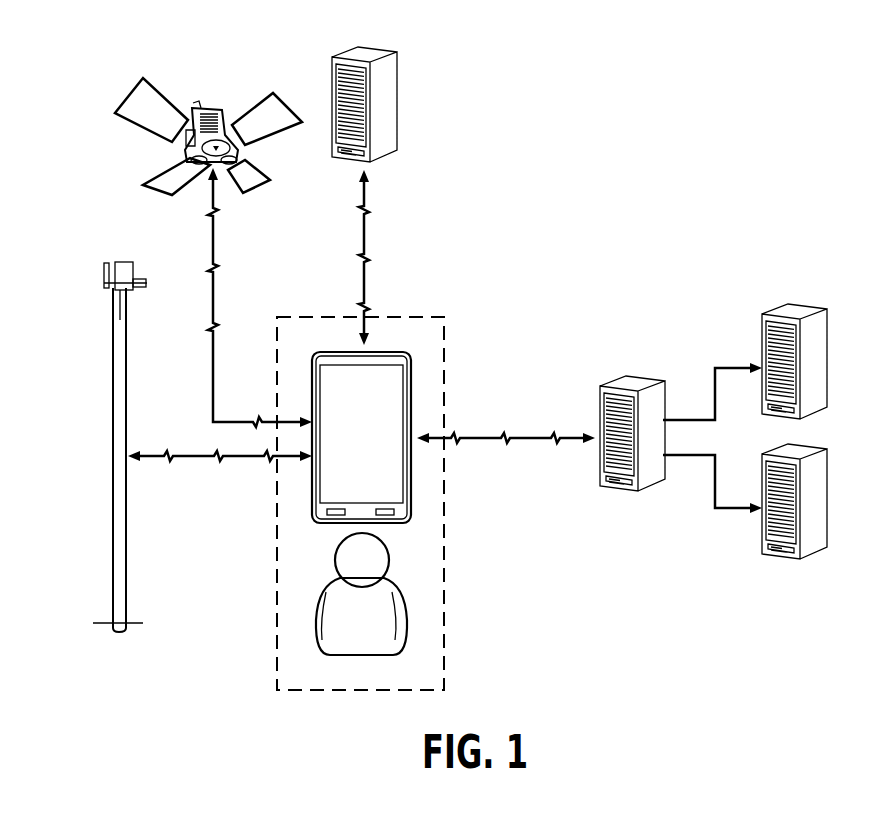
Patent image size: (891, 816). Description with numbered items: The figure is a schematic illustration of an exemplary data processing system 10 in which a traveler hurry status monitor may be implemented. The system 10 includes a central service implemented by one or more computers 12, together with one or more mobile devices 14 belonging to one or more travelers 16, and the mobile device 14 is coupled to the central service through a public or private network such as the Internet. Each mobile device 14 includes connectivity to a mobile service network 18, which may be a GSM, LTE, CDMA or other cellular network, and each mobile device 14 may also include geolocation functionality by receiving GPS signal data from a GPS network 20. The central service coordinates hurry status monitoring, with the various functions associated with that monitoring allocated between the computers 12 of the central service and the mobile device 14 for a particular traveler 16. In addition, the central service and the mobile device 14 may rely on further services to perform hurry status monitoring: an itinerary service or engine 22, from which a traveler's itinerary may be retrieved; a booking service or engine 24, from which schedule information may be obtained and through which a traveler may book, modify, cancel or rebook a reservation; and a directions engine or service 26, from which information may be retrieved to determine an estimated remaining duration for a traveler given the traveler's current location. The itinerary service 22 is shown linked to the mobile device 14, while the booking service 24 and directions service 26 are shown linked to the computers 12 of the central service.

The data processing system 10 is at (608, 148).
The computer 12 is at (665, 396).
The mobile device 14 is at (335, 524).
The traveler 16 is at (394, 588).
The mobile service network 18 is at (125, 395).
The GPS network 20 is at (214, 104).
The itinerary service 22 is at (398, 70).
The booking service 24 is at (828, 327).
The directions engine 26 is at (828, 475).